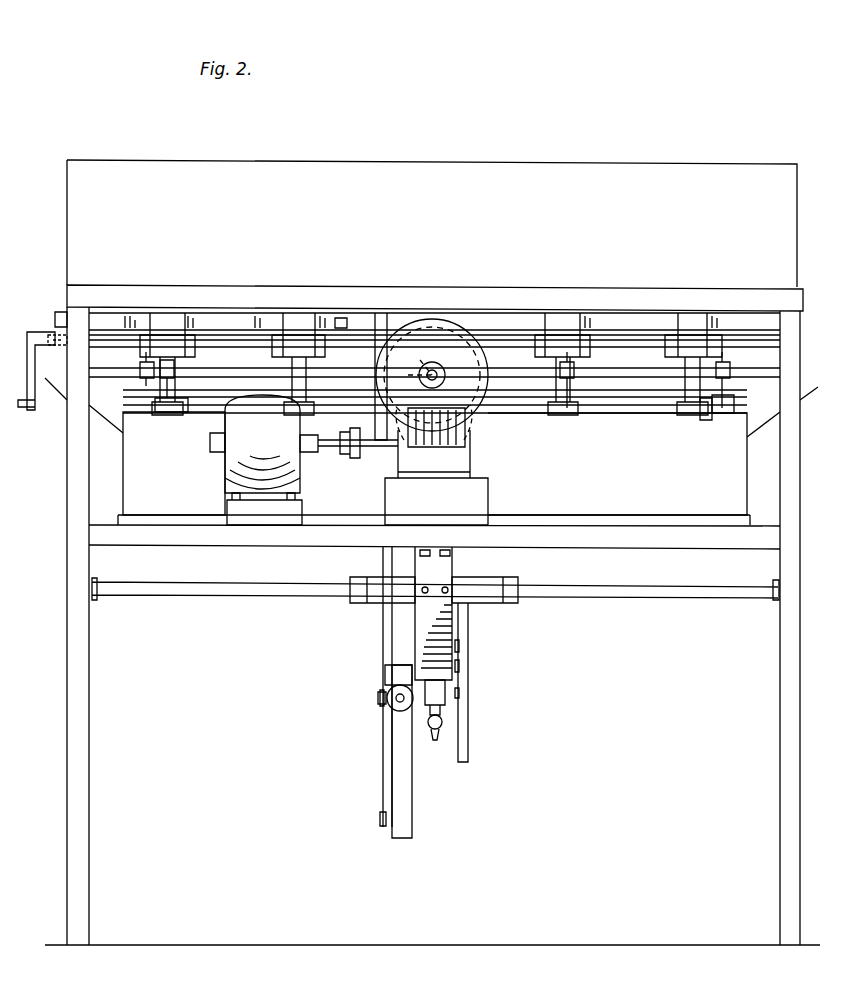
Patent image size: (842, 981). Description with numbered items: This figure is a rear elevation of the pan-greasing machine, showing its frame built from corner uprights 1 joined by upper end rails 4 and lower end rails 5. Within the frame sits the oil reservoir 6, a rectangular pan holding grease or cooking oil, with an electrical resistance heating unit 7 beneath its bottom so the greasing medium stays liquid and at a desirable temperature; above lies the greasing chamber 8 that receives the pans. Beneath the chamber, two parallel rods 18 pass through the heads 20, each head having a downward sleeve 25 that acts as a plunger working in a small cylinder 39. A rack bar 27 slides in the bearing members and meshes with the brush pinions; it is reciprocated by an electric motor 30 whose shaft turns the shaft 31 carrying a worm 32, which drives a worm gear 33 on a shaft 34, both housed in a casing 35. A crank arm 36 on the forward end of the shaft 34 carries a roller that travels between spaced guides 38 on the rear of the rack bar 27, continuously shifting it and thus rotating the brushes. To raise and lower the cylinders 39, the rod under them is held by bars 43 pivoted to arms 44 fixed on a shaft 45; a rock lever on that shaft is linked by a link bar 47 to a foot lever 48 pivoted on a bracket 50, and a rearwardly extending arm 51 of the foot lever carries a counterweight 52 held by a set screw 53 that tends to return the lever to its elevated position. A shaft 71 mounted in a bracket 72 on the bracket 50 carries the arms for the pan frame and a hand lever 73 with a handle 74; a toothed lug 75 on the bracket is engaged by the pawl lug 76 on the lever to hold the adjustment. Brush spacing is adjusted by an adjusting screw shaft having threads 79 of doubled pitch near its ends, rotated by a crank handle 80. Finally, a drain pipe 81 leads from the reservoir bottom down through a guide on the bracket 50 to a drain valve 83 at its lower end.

The corner uprights 1 is at (78, 681).
The upper end rails 4 is at (230, 296).
The lower end rails 5 is at (707, 546).
The oil reservoir 6 is at (617, 464).
The electrical resistance heating unit 7 is at (618, 527).
The greasing chamber 8 is at (596, 161).
The rods 18 is at (760, 336).
The heads 20 is at (300, 320).
The sleeve 25 is at (188, 353).
The rack bar 27 is at (618, 326).
The electric motor 30 is at (237, 456).
The shaft 31 is at (332, 448).
The worm 32 is at (428, 452).
The worm gear 33 is at (468, 420).
The shaft 34 is at (440, 372).
The casing 35 is at (462, 340).
The crank arm 36 is at (433, 318).
The spaced guides 38 is at (380, 318).
The cylinders 39 is at (167, 404).
The bars 43 is at (705, 418).
The arms 44 is at (732, 384).
The shaft 45 is at (640, 378).
The link bar 47 is at (383, 756).
The foot lever 48 is at (396, 791).
The bracket 50 is at (420, 618).
The rearwardly extending arm 51 is at (390, 668).
The counterweight 52 is at (395, 708).
The set screw 53 is at (378, 697).
The shaft 71 is at (240, 590).
The bracket 72 is at (495, 580).
The hand lever 73 is at (466, 626).
The handle 74 is at (468, 762).
The lug 75 is at (462, 651).
The pawl lug 76 is at (465, 695).
The threads 79 is at (52, 333).
The crank handle 80 is at (42, 398).
The drain pipe 81 is at (446, 700).
The drain valve 83 is at (442, 722).